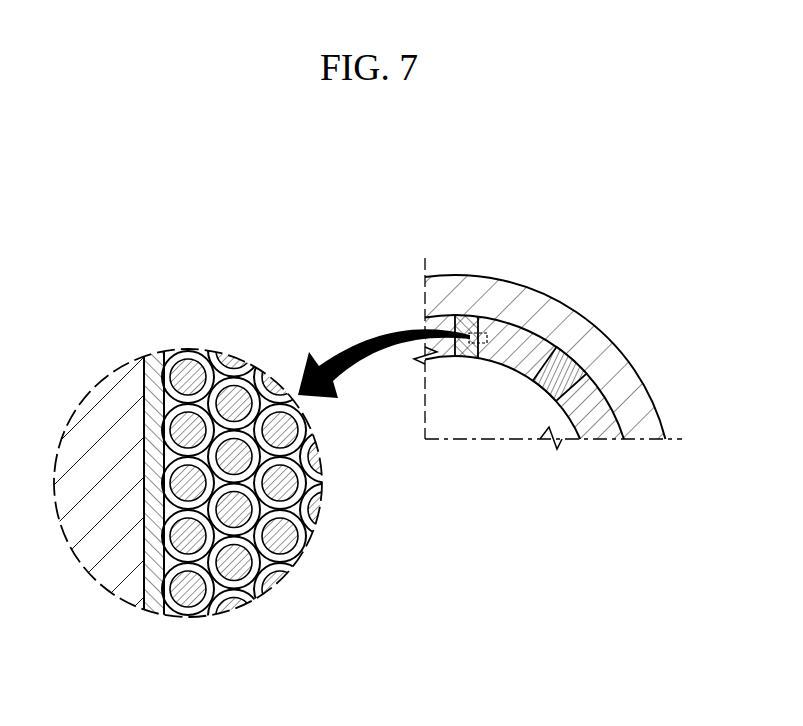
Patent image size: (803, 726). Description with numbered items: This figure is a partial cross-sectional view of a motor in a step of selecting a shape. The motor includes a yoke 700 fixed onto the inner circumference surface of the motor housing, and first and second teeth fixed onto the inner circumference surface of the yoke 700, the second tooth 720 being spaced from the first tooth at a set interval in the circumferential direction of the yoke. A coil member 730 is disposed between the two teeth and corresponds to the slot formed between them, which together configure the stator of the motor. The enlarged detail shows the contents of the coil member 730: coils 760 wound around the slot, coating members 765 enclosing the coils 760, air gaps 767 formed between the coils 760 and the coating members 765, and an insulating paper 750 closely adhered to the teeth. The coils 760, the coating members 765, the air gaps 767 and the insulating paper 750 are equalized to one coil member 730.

The yoke 700 is at (540, 300).
The second tooth 720 is at (568, 366).
The coil member 730 is at (518, 358).
The insulating paper 750 is at (150, 612).
The coils 760 is at (268, 505).
The coating members 765 is at (265, 565).
The air gaps 767 is at (267, 510).